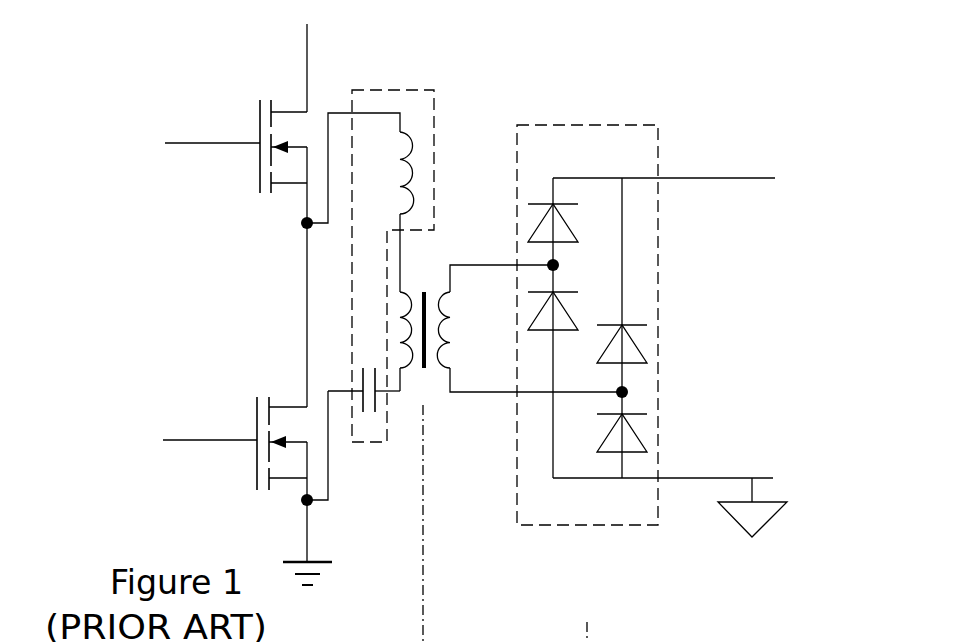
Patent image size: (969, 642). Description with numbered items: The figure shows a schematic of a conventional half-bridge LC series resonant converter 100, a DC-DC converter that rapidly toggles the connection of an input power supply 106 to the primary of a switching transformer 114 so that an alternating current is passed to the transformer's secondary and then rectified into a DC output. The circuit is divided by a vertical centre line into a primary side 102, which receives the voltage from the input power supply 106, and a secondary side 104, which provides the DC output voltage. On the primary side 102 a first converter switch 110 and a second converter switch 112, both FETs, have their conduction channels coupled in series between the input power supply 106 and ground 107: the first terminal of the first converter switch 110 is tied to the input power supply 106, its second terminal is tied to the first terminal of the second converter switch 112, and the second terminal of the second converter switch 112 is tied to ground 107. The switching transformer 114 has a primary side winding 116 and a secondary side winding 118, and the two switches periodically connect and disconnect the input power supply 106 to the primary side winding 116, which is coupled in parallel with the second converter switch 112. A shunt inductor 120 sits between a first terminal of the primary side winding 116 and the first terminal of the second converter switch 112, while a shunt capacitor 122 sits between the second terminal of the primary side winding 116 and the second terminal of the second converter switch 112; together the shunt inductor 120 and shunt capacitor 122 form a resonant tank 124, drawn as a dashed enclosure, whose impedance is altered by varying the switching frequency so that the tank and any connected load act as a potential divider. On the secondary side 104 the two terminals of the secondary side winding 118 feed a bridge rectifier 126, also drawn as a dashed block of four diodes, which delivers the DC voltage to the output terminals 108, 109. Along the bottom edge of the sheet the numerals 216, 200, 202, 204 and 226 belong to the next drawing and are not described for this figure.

The resonant converter 100 is at (580, 80).
The primary side 102 is at (412, 581).
The secondary side 104 is at (462, 581).
The input power supply 106 is at (330, 56).
The ground 107 is at (290, 562).
The output terminal 108 is at (701, 179).
The output terminal 109 is at (716, 502).
The first converter switch 110 is at (260, 110).
The second converter switch 112 is at (257, 418).
The switching transformer 114 is at (428, 386).
The primary side winding 116 is at (408, 325).
The secondary side winding 118 is at (447, 342).
The shunt inductor 120 is at (411, 148).
The shunt capacitor 122 is at (375, 405).
The resonant tank 124 is at (375, 88).
The bridge rectifier 126 is at (658, 125).
The element of FIG. 2 (partial) 216 is at (315, 641).
The converter of FIG. 2 (partial) 200 is at (829, 633).
The element of FIG. 2 (partial) 202 is at (562, 634).
The element of FIG. 2 (partial) 204 is at (611, 634).
The element of FIG. 2 (partial) 226 is at (736, 634).